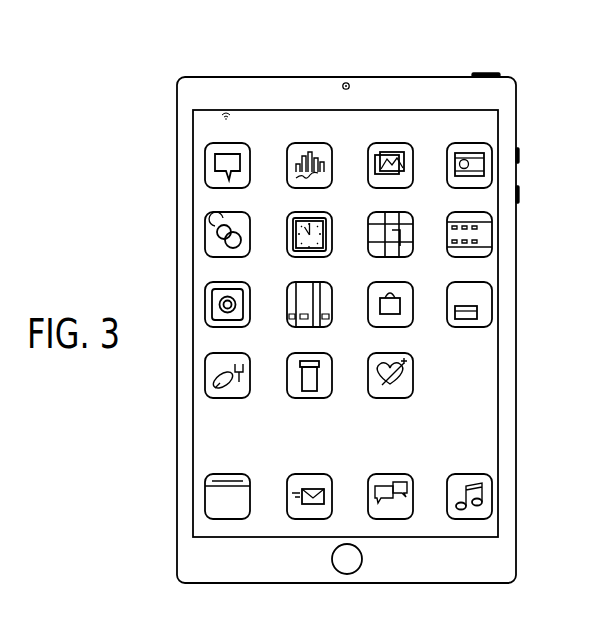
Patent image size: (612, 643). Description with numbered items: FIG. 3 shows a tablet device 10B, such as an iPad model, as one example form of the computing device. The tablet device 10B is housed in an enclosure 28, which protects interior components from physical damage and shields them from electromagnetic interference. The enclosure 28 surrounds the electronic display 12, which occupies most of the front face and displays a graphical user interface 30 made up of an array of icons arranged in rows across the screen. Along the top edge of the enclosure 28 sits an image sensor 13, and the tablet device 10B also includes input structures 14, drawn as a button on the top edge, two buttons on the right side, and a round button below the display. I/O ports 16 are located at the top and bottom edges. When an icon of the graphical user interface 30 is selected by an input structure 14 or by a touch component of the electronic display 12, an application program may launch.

The tablet device 10B is at (183, 42).
The electronic display 12 is at (498, 432).
The image sensor 13 is at (346, 83).
The input structures 14 is at (500, 75).
The I/O ports 16 is at (266, 77).
The enclosure 28 is at (516, 307).
The graphical user interface 30 is at (474, 404).